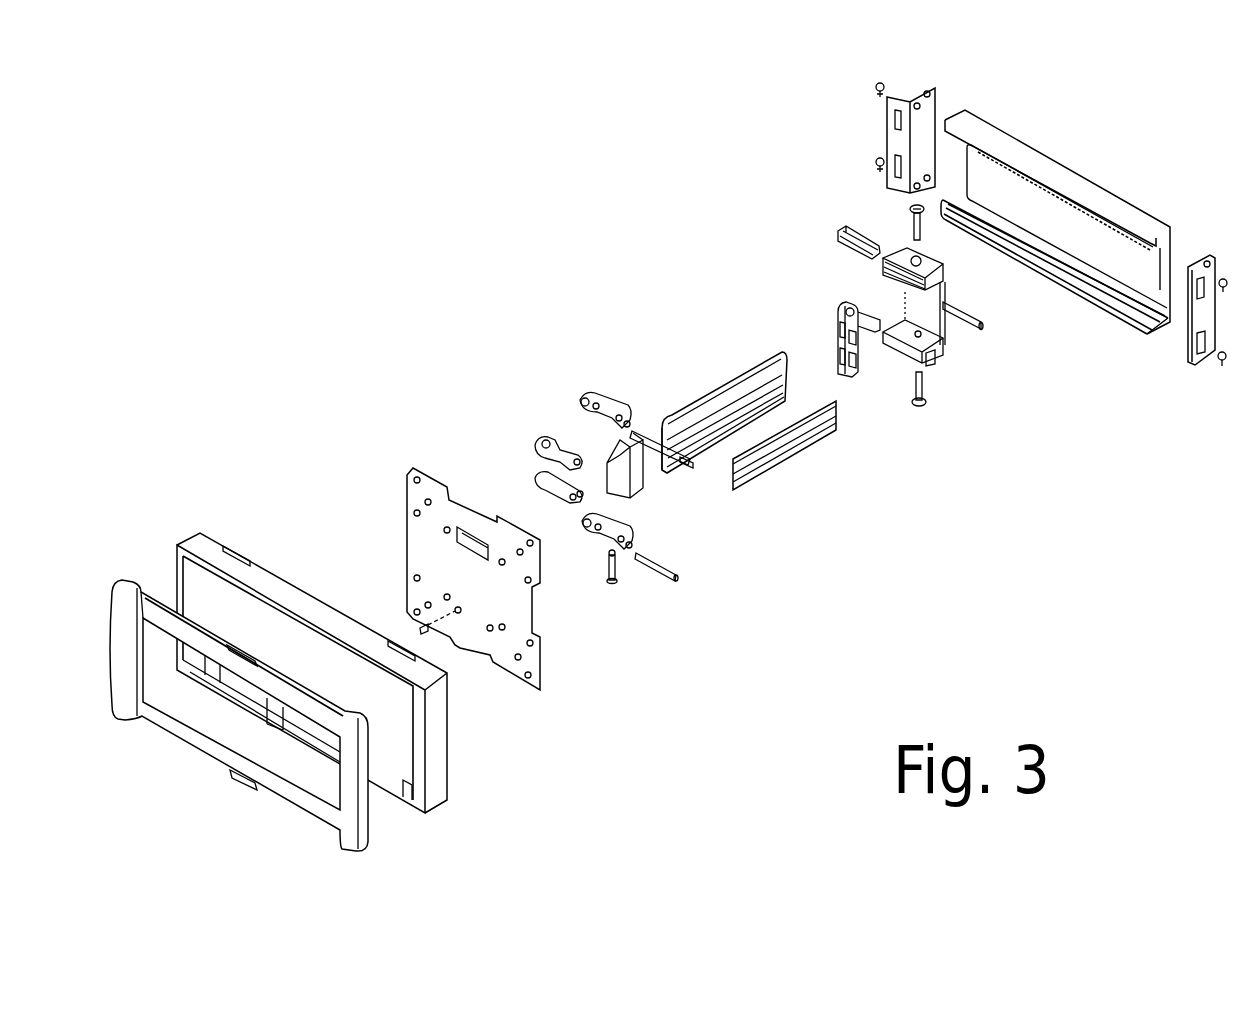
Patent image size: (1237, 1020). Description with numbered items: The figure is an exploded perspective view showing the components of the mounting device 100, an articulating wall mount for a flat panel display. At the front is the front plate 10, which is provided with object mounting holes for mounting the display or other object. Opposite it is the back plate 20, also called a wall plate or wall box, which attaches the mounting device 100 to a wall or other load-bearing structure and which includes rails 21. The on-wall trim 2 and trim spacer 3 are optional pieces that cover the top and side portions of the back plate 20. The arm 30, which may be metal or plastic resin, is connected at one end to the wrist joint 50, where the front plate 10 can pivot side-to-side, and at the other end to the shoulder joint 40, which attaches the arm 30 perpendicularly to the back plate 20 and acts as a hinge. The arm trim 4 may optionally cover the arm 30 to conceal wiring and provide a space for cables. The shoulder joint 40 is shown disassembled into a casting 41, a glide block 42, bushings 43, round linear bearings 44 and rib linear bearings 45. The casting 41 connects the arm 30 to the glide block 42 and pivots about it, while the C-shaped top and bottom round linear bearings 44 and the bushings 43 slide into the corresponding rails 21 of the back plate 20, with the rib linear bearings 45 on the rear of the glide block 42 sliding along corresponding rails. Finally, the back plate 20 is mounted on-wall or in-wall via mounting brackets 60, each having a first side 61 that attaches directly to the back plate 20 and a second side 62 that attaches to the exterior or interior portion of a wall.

The on-wall trim 2 is at (147, 564).
The trim spacer 3 is at (233, 536).
The arm trim 4 is at (788, 490).
The front plate 10 is at (549, 693).
The back plate 20 is at (1055, 235).
The rails 21 is at (1133, 322).
The arm 30 is at (695, 391).
The shoulder joint 40 is at (898, 359).
The casting 41 is at (845, 385).
The glide block 42 is at (895, 305).
The bushings 43 is at (840, 215).
The round linear bearings 44 is at (933, 370).
The rib linear bearings 45 is at (993, 342).
The wrist joint 50 is at (548, 391).
The mounting brackets 60 is at (1188, 367).
The first side 61 is at (901, 113).
The second side 62 is at (884, 128).
The mounting device 100 is at (904, 572).